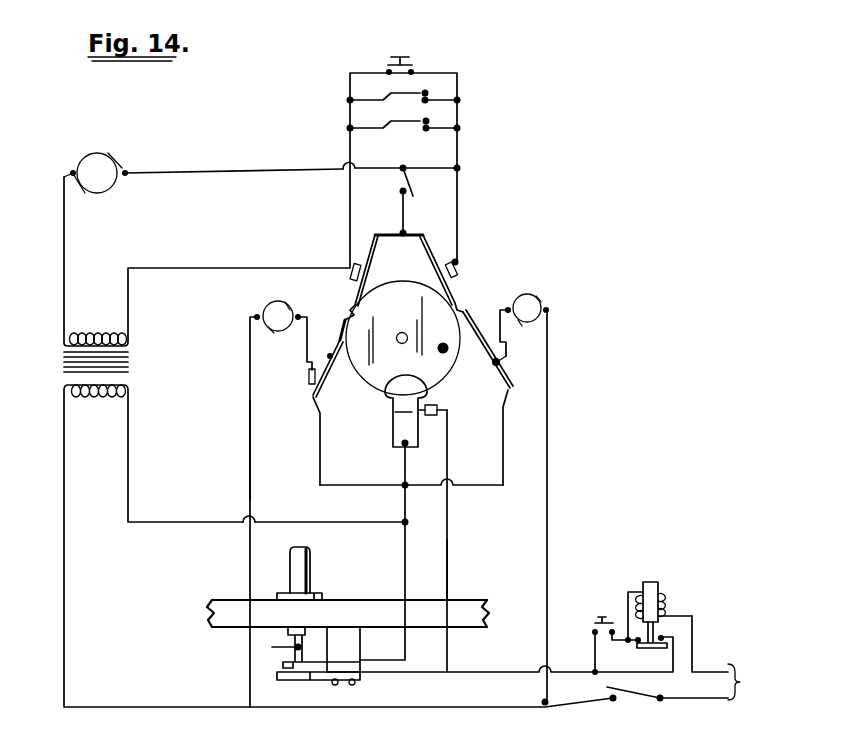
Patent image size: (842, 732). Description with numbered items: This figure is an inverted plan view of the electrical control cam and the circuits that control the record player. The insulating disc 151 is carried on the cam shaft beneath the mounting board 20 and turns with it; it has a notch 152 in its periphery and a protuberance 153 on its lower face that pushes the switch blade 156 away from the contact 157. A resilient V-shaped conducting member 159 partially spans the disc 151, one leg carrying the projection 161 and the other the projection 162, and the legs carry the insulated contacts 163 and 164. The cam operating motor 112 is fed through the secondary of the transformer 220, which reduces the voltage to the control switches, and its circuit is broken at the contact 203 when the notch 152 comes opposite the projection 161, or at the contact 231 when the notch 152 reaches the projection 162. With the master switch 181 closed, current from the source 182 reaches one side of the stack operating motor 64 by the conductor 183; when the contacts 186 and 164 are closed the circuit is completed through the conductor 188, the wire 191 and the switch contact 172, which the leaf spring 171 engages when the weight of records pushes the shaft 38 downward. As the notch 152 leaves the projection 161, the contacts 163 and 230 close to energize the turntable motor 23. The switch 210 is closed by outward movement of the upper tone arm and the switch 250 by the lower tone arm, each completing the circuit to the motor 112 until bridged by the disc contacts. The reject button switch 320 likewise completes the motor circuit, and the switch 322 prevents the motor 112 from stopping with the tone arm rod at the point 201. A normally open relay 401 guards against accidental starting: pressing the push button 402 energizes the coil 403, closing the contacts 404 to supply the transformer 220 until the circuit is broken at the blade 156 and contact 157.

The cam operating motor 112 is at (116, 182).
The transformer 220 is at (62, 362).
The reject button switch 320 is at (396, 54).
The switch 210 is at (427, 92).
The switch 250 is at (430, 121).
The switch 322 is at (400, 168).
The conducting member 159 is at (376, 234).
The disc 151 is at (408, 273).
The notch 152 is at (356, 309).
The protuberance 153 is at (441, 345).
The projection 162 is at (350, 312).
The projection 161 is at (460, 296).
The contact 231 is at (350, 270).
The contact 203 is at (452, 258).
The contact 164 is at (311, 397).
The contact 163 is at (504, 388).
The contact 186 is at (308, 378).
The contact 230 is at (502, 360).
The switch blade 156 is at (395, 413).
The contact 157 is at (433, 409).
The conductor 188 is at (389, 485).
The stack operating motor 64 is at (284, 332).
The turntable motor 23 is at (536, 302).
The conductor 183 is at (250, 445).
The wire 191 is at (409, 572).
The mounting board 20 is at (232, 622).
The shaft 38 is at (312, 585).
The leaf spring 171 is at (320, 660).
The switch contact 172 is at (310, 680).
The relay 401 is at (660, 575).
The relay coil 403 is at (661, 604).
The relay contacts 404 is at (664, 637).
The push button 402 is at (598, 620).
The master switch 181 is at (640, 692).
The source 182 is at (751, 682).
The point 201 is at (782, 731).